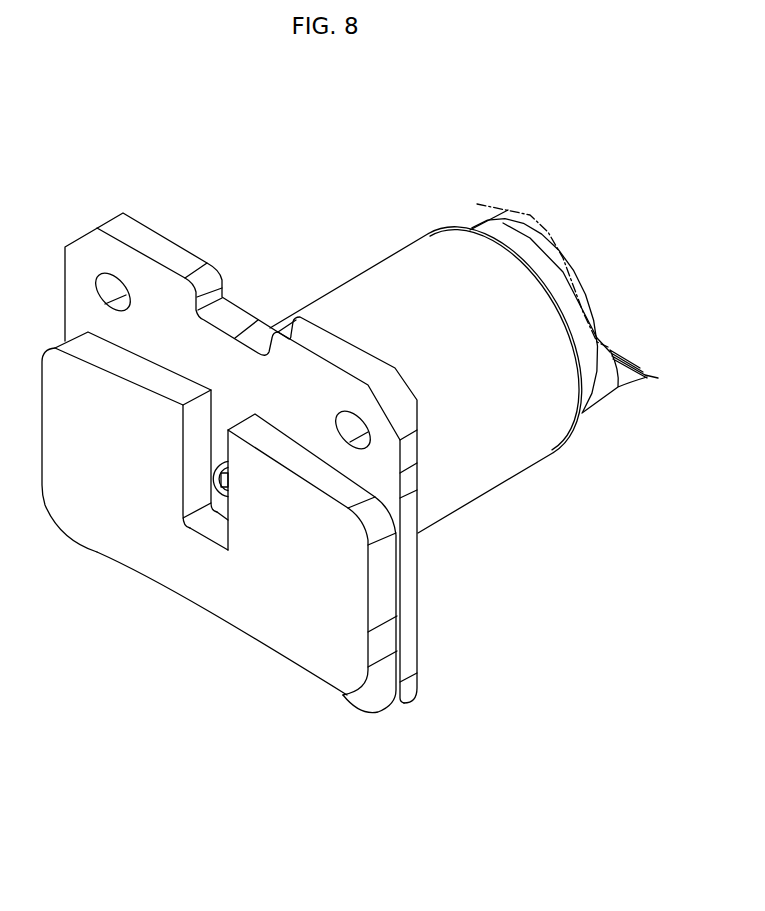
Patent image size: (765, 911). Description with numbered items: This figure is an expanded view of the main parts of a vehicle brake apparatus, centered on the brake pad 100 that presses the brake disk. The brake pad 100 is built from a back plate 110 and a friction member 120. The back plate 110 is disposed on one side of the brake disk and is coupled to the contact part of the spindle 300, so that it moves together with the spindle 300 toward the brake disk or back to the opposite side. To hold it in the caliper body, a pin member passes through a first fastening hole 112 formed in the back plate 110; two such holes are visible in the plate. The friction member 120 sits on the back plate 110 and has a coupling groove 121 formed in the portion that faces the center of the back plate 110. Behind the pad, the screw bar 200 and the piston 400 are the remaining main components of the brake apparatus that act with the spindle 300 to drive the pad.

The brake pad 100 is at (322, 845).
The back plate 110 is at (407, 483).
The first fastening hole 112 is at (350, 420).
The friction member 120 is at (282, 605).
The coupling groove 121 is at (198, 483).
The screw bar 200 is at (613, 383).
The spindle 300 is at (216, 502).
The piston 400 is at (460, 273).